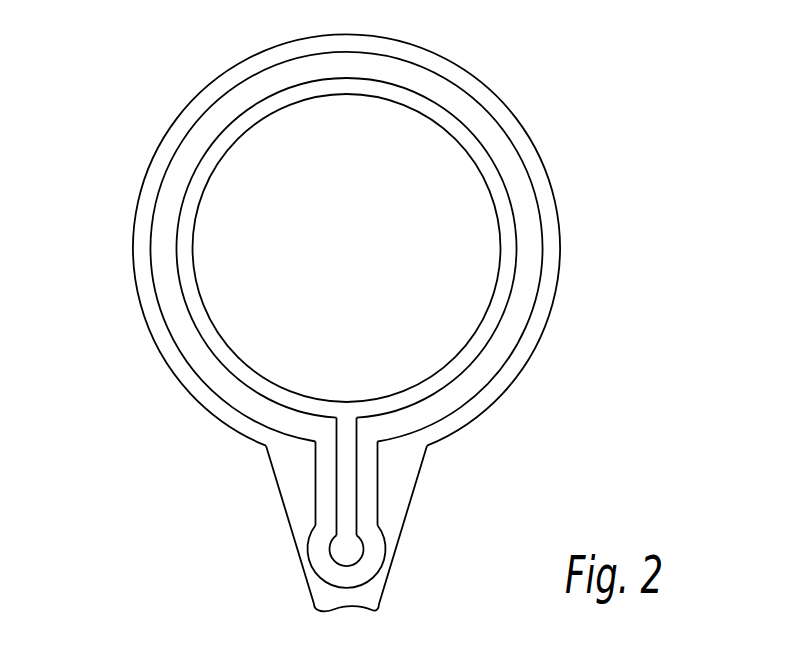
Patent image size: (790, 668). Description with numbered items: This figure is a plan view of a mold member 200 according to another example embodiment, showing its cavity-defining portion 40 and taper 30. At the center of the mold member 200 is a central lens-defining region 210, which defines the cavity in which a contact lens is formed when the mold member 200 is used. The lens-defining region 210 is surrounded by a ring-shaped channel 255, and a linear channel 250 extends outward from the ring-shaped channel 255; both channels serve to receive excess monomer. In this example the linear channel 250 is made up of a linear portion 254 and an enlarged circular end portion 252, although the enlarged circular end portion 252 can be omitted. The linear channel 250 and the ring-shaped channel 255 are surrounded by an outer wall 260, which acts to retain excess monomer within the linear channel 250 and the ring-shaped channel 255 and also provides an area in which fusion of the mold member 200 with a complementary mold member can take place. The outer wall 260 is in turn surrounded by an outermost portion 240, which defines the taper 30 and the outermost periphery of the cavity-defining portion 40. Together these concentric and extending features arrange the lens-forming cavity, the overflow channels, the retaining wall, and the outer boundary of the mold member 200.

The mold member 200 is at (194, 72).
The cavity-defining portion 40 is at (568, 166).
The ring-shaped channel 255 is at (458, 130).
The central lens-defining region 210 is at (217, 202).
The outermost portion 240 is at (293, 450).
The taper 30 is at (430, 527).
The linear channel 250 is at (329, 490).
The outer wall 260 is at (323, 562).
The linear portion 254 is at (347, 456).
The enlarged circular end portion 252 is at (347, 553).